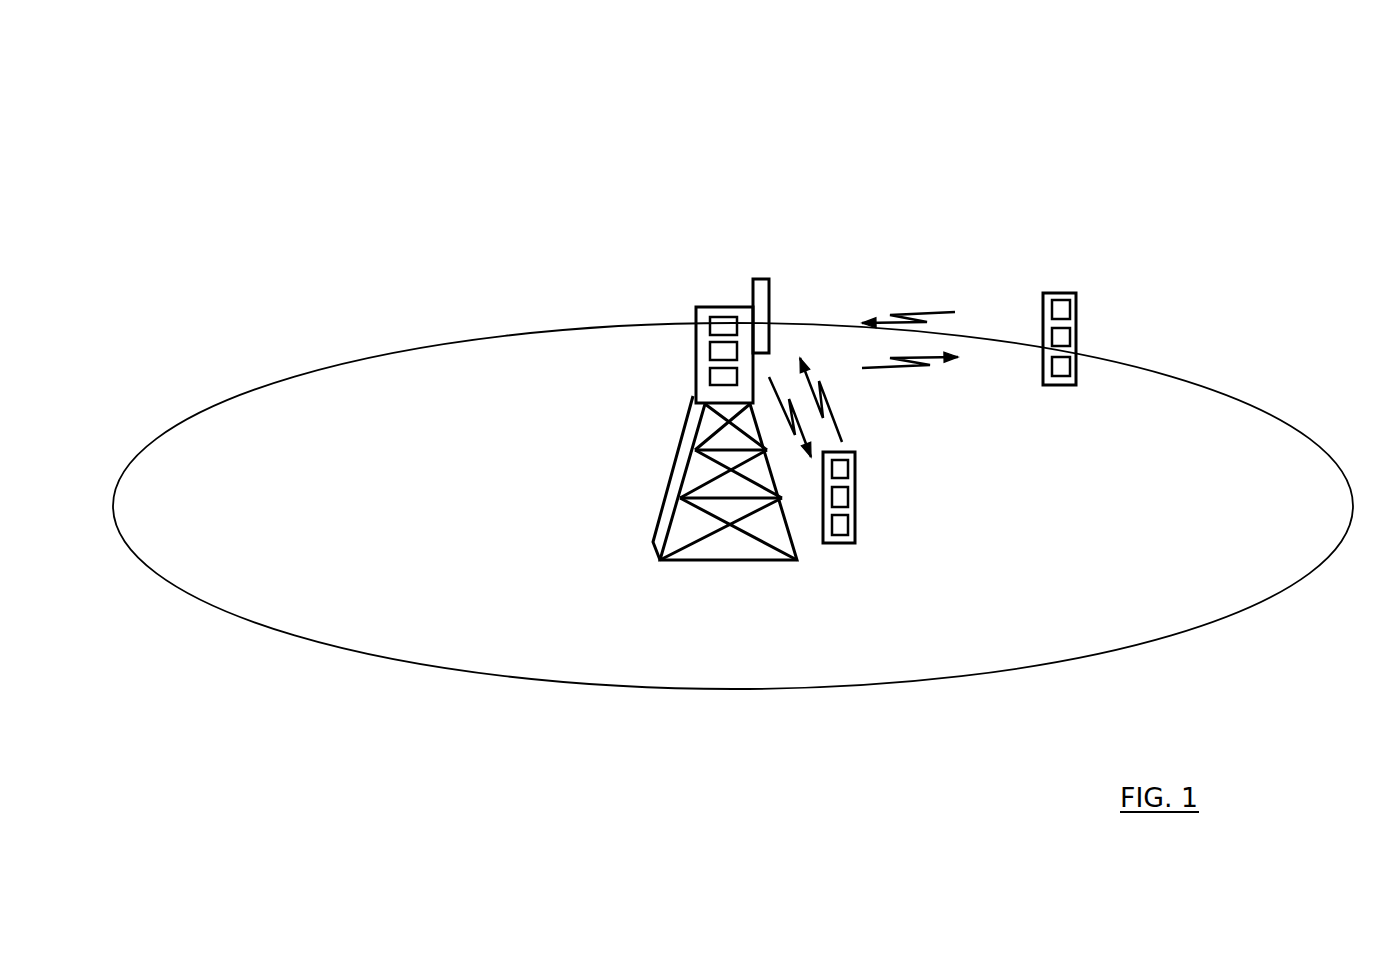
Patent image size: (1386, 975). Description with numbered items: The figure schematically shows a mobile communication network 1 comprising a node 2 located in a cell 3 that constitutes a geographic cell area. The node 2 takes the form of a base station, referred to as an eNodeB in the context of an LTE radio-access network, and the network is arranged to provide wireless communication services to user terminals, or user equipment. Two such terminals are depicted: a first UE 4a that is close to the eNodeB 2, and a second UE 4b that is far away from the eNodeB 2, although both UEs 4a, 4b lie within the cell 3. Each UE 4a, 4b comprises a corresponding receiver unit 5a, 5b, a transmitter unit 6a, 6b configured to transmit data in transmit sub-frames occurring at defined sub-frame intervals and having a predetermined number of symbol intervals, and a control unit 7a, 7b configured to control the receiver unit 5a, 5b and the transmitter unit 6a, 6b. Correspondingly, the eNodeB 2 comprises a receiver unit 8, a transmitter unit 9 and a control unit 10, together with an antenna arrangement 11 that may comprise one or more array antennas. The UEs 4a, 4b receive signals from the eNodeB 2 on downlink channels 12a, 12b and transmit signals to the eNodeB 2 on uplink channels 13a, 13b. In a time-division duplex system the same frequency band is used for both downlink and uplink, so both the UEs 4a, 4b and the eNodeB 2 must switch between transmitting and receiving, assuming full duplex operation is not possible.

The mobile communication network 1 is at (695, 108).
The node 2 is at (654, 371).
The cell 3 is at (400, 438).
The first UE 4a is at (848, 548).
The second UE 4b is at (1057, 290).
The receiver unit 5a is at (840, 469).
The receiver unit 5b is at (1061, 309).
The transmitter unit 6a is at (840, 497).
The transmitter unit 6b is at (1061, 337).
The control unit 7a is at (840, 525).
The control unit 7b is at (1061, 366).
The receiver unit 8 is at (720, 326).
The transmitter unit 9 is at (720, 353).
The control unit 10 is at (718, 377).
The antenna arrangement 11 is at (758, 298).
The downlink channel 12a is at (788, 397).
The downlink channel 12b is at (842, 442).
The uplink channel 13a is at (878, 367).
The uplink channel 13b is at (923, 312).